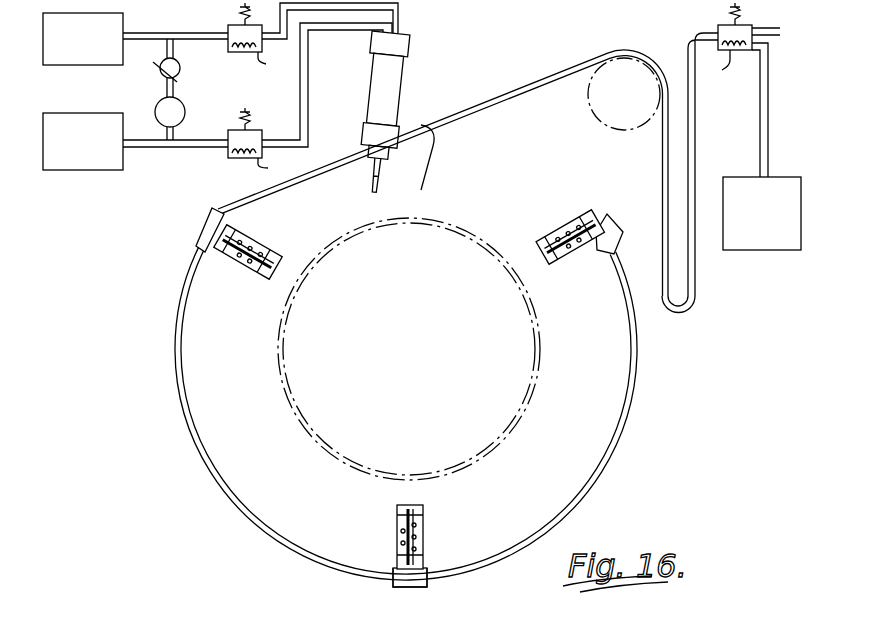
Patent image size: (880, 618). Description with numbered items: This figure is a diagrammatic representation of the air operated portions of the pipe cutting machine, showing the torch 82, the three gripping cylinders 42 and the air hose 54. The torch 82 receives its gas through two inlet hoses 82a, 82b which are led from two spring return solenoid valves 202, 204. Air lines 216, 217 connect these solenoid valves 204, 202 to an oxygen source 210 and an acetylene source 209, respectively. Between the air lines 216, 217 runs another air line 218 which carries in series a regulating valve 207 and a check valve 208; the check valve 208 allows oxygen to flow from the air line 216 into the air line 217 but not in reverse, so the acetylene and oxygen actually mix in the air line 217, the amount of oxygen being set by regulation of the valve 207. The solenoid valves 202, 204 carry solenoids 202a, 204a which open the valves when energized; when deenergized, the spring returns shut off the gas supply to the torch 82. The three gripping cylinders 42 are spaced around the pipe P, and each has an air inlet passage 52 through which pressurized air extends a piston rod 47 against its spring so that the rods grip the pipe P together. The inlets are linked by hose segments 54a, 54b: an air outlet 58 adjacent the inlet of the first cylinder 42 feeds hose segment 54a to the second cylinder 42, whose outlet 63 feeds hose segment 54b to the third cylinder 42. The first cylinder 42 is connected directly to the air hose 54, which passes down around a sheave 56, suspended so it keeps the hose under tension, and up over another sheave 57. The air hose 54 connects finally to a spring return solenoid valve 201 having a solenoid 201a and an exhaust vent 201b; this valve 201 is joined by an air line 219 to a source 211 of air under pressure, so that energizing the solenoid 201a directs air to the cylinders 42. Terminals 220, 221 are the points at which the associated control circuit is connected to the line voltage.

The acetylene source 209 is at (78, 65).
The oxygen source 210 is at (78, 170).
The air line 217 is at (138, 40).
The air line 218 is at (166, 90).
The check valve 208 is at (180, 76).
The regulating valve 207 is at (185, 112).
The solenoid valve 202 is at (231, 27).
The solenoid 202a is at (275, 70).
The inlet hose 82b is at (397, 14).
The air line 216 is at (158, 147).
The solenoid valve 204 is at (254, 128).
The solenoid 204a is at (288, 167).
The inlet hose 82a is at (346, 32).
The torch 82 is at (414, 80).
The air inlet passage 52 is at (222, 210).
The sheave 57 is at (613, 128).
The air hose 54 is at (697, 130).
The sheave 56 is at (668, 258).
The solenoid valve 201 is at (716, 28).
The exhaust vent 201b is at (770, 26).
The solenoid 201a is at (725, 71).
The air line 219 is at (769, 130).
The source of air under pressure 211 is at (763, 250).
The hose segment 54b is at (588, 493).
The hose segment 54a is at (201, 455).
The air outlet 58 is at (196, 250).
The outlet 63 is at (428, 586).
The cylinder 42 is at (258, 270).
The piston rod 47 is at (262, 246).
The pipe P is at (513, 430).
The terminal 220 is at (264, 617).
The terminal 221 is at (350, 617).